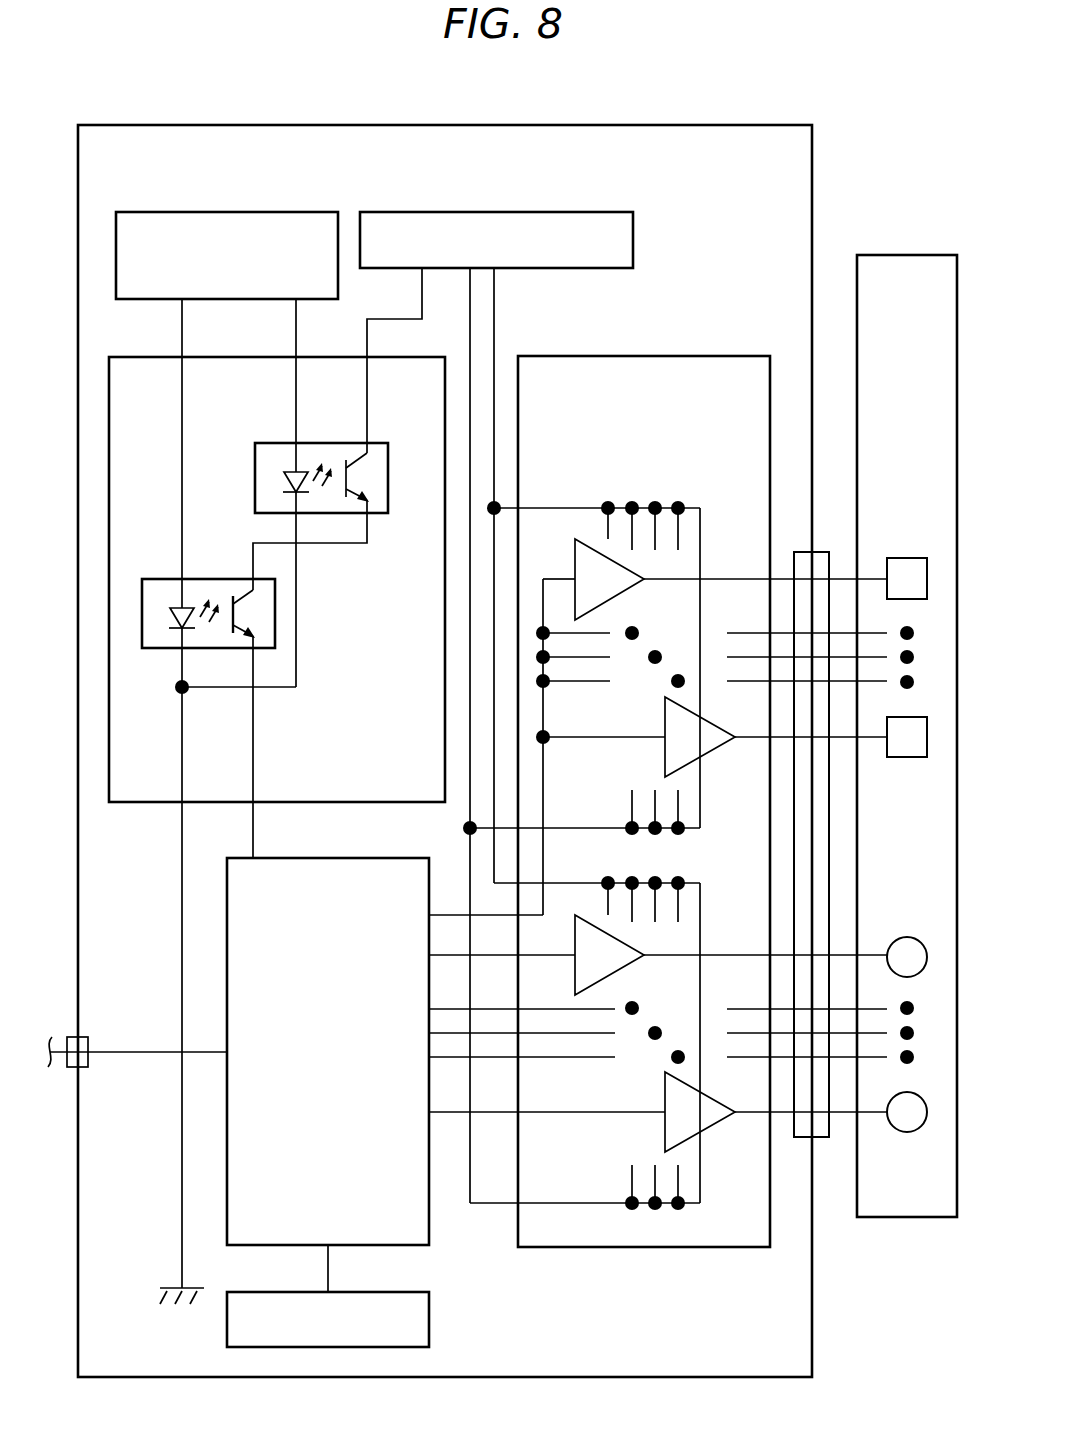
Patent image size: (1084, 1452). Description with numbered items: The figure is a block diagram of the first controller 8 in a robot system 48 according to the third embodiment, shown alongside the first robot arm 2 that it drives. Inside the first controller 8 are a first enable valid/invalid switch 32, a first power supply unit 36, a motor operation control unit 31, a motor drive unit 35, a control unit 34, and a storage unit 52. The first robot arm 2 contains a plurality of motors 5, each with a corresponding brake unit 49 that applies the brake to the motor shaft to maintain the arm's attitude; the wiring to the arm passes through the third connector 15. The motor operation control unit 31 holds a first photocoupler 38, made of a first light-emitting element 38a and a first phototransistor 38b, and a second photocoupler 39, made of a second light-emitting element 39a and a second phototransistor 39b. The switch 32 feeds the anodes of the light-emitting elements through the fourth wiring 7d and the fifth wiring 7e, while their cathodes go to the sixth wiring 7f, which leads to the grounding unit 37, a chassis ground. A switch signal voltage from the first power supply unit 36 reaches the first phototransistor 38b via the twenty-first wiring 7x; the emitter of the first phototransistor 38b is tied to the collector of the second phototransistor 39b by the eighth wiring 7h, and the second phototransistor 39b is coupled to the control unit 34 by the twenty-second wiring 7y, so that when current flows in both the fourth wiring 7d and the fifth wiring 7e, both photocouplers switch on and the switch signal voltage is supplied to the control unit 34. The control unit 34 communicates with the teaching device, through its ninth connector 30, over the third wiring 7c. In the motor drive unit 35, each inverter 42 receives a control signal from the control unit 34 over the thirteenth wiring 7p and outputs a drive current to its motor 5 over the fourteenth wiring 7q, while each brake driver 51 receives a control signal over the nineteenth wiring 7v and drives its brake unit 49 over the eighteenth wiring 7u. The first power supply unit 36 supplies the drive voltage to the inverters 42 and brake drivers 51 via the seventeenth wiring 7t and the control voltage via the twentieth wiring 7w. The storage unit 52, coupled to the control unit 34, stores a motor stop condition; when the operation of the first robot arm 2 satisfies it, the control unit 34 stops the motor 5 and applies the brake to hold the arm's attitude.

The robot system 48 is at (882, 106).
The first controller 8 is at (783, 125).
The first robot arm 2 is at (925, 255).
The first enable valid/invalid switch 32 is at (290, 211).
The first power supply unit 36 is at (582, 211).
The motor operation control unit 31 is at (394, 356).
The motor drive unit 35 is at (718, 355).
The control unit 34 is at (380, 857).
The storage unit 52 is at (382, 1291).
The third connector 15 is at (820, 552).
The brake unit 49 is at (907, 558).
The motor 5 is at (907, 937).
The brake driver 51 is at (612, 599).
The inverter 42 is at (612, 975).
The first photocoupler 38 is at (316, 443).
The first light-emitting element 38a is at (294, 470).
The first phototransistor 38b is at (353, 462).
The second photocoupler 39 is at (200, 578).
The second light-emitting element 39a is at (178, 606).
The second phototransistor 39b is at (238, 597).
The ninth connector 30 is at (88, 1037).
The grounding unit 37 is at (163, 1288).
The third wiring 7c is at (207, 1052).
The fourth wiring 7d is at (296, 330).
The fifth wiring 7e is at (182, 330).
The sixth wiring 7f is at (182, 1153).
The eighth wiring 7h is at (348, 543).
The thirteenth wiring 7p is at (562, 955).
The fourteenth wiring 7q is at (730, 955).
The seventeenth wiring 7t is at (494, 298).
The eighteenth wiring 7u is at (730, 579).
The nineteenth wiring 7v is at (494, 858).
The twentieth wiring 7w is at (470, 334).
The twenty-first wiring 7x is at (422, 296).
The twenty-second wiring 7y is at (253, 706).